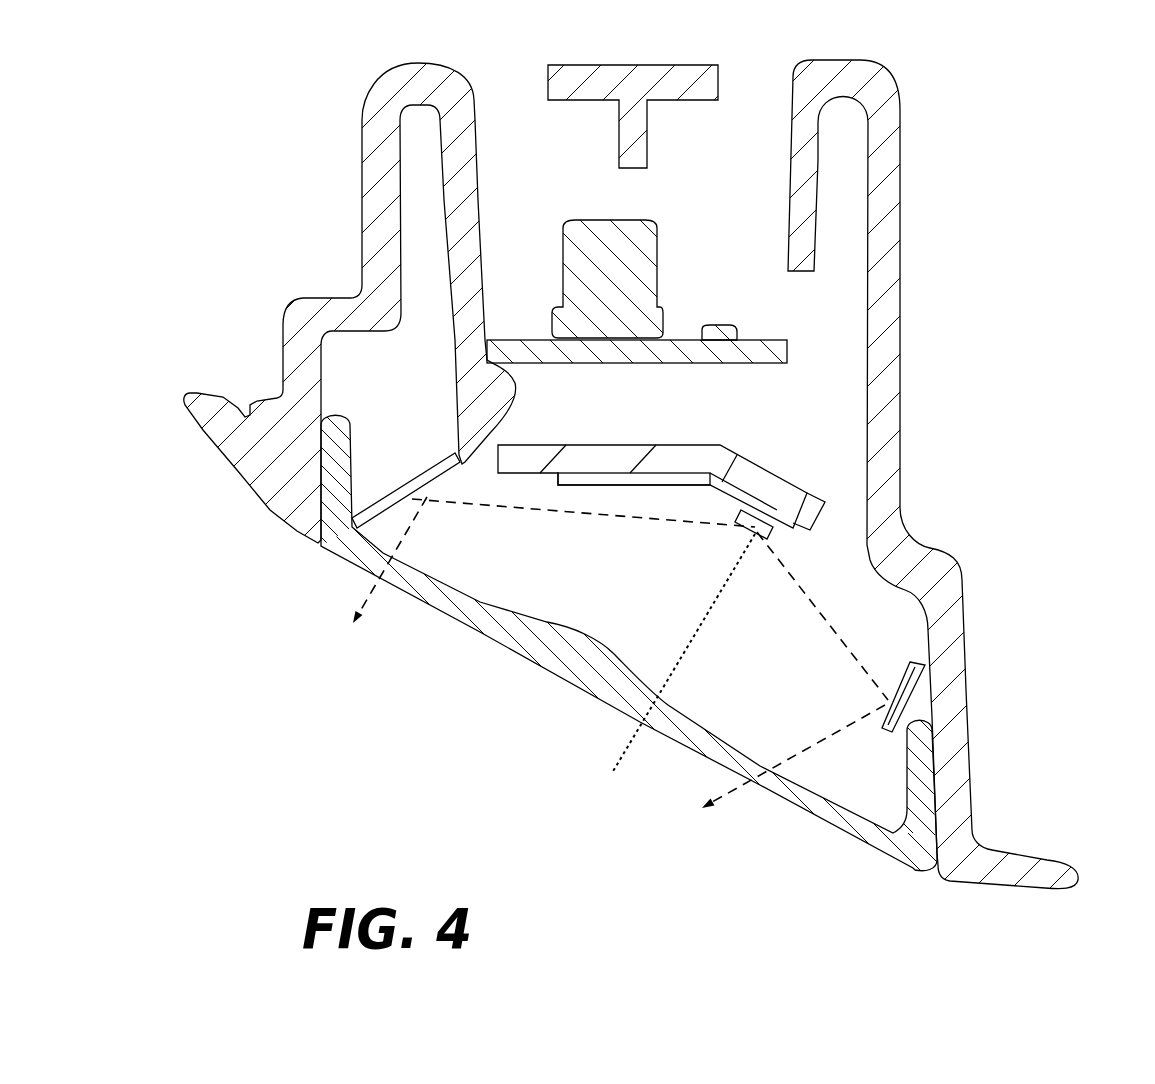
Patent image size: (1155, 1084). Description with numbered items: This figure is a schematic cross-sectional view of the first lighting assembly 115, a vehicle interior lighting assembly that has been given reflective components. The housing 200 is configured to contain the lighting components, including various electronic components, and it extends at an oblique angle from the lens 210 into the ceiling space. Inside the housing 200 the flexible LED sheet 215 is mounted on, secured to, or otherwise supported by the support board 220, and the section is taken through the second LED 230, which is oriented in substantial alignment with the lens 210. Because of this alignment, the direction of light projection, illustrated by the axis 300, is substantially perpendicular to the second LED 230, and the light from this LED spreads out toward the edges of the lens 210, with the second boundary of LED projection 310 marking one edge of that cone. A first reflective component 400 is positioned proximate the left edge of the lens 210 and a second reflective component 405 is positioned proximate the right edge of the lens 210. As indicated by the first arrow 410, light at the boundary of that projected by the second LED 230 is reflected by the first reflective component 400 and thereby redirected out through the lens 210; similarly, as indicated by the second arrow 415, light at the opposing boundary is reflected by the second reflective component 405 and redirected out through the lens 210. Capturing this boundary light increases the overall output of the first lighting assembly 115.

The first lighting assembly 115 is at (230, 167).
The housing 200 is at (893, 245).
The lens 210 is at (857, 823).
The flexible LED sheet 215 is at (583, 488).
The support board 220 is at (779, 478).
The second LED 230 is at (790, 495).
The axis 300 is at (620, 758).
The second boundary of LED projection 310 is at (972, 808).
The first reflective component 400 is at (375, 513).
The second reflective component 405 is at (913, 678).
The first arrow 410 is at (372, 591).
The second arrow 415 is at (733, 788).